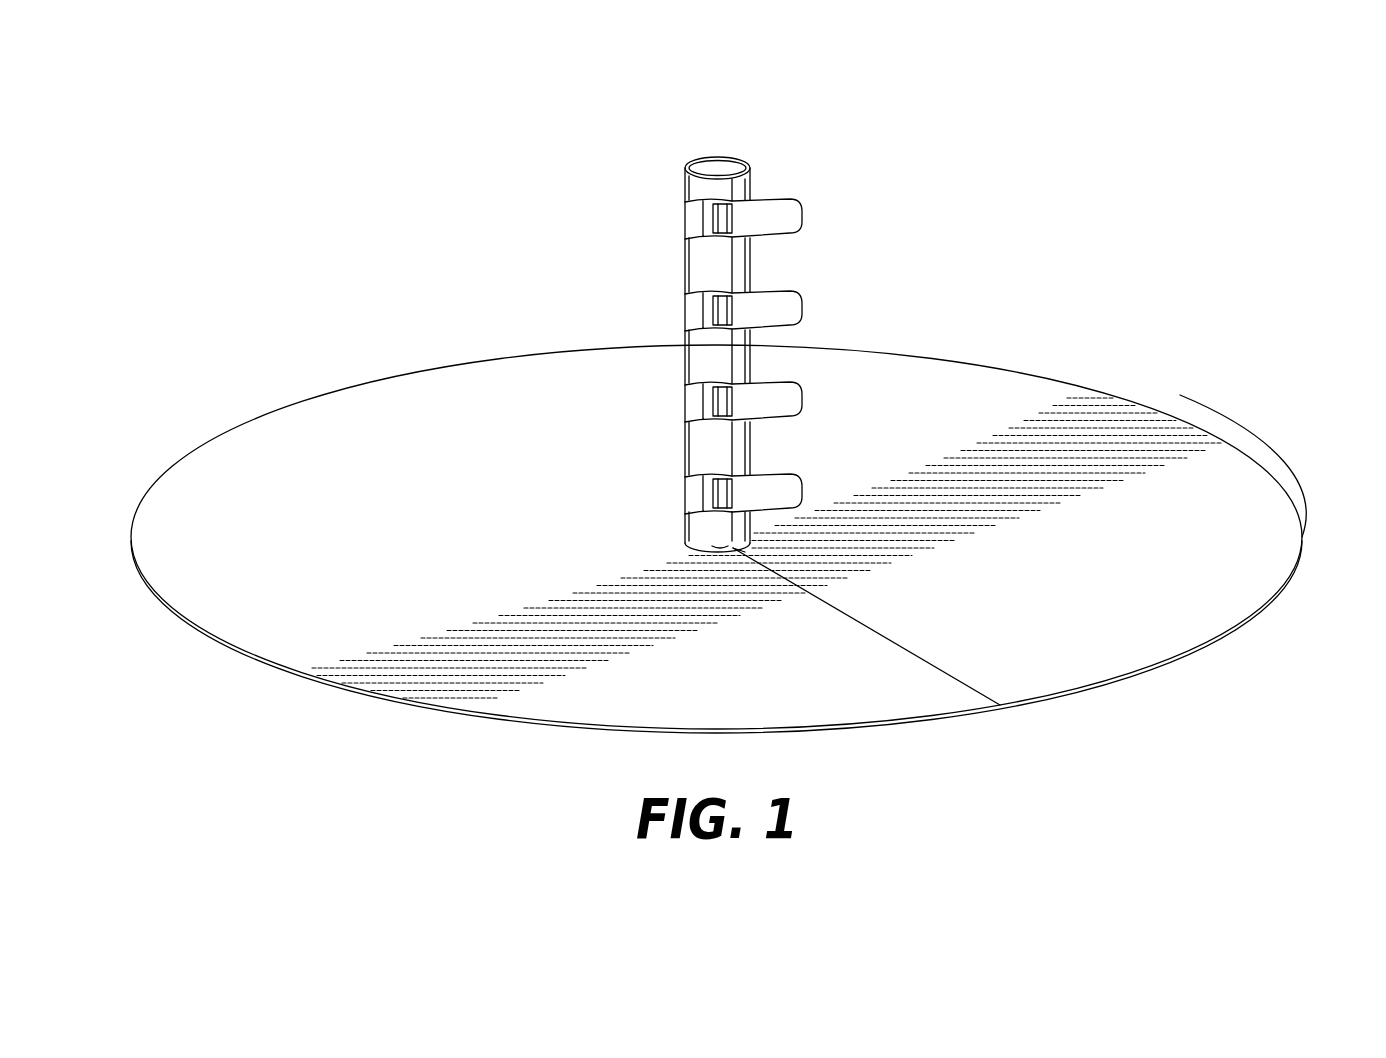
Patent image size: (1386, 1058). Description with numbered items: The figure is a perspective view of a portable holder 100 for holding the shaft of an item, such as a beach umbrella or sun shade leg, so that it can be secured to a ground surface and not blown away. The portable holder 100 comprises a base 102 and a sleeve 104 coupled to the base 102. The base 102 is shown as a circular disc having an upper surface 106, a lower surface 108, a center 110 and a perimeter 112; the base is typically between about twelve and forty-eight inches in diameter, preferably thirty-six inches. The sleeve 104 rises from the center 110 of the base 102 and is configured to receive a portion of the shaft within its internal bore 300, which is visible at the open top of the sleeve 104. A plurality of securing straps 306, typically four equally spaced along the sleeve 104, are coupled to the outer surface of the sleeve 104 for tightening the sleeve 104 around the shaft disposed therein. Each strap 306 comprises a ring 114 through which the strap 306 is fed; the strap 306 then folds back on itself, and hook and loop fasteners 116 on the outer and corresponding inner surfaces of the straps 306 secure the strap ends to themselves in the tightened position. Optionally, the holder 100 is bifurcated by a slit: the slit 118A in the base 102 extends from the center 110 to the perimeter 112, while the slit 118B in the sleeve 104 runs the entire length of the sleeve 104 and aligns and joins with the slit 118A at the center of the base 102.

The portable holder 100 is at (878, 95).
The base 102 is at (924, 407).
The sleeve 104 is at (721, 323).
The upper surface 106 is at (1115, 412).
The lower surface 108 is at (1170, 678).
The center 110 is at (766, 540).
The perimeter 112 is at (1281, 479).
The ring 114 is at (724, 195).
The hook and loop fasteners 116 is at (768, 190).
The slit in the base 118A is at (910, 637).
The slit in the sleeve 118B is at (730, 527).
The internal bore 300 is at (691, 159).
The securing straps 306 is at (778, 327).